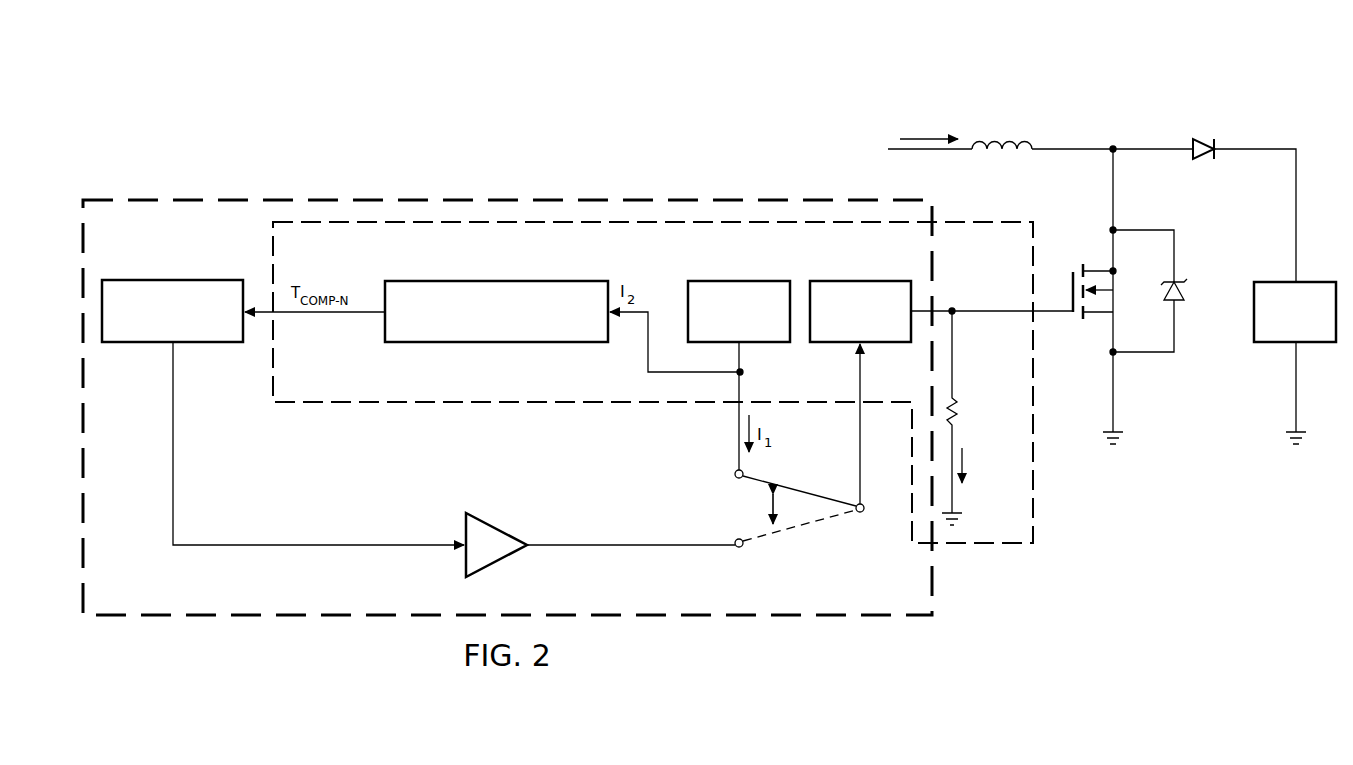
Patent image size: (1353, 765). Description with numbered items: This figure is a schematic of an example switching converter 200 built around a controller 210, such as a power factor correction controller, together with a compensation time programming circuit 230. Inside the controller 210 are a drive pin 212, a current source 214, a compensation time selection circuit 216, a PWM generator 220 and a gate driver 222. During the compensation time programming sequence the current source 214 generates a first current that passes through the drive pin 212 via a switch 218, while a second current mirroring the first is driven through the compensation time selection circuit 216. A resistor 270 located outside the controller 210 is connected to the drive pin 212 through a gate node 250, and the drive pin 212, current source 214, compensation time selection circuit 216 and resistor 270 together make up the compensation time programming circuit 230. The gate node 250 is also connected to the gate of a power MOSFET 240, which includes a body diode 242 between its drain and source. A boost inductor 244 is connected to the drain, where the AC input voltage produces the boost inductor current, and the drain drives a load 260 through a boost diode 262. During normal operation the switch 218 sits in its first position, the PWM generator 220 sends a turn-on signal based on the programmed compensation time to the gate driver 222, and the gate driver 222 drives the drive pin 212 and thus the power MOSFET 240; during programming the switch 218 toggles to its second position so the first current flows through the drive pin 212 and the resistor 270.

The switching converter 200 is at (312, 128).
The controller 210 is at (481, 197).
The drive pin 212 is at (868, 280).
The current source 214 is at (750, 280).
The compensation time selection circuit 216 is at (497, 280).
The switch 218 is at (796, 525).
The pulse width modulation generator 220 is at (163, 280).
The gate driver 222 is at (500, 563).
The compensation time programming circuit 230 is at (653, 382).
The power MOSFET 240 is at (1155, 230).
The body diode 242 is at (1187, 281).
The boost inductor 244 is at (1010, 133).
The gate node 250 is at (953, 308).
The load 260 is at (1315, 282).
The boost diode 262 is at (1205, 138).
The resistor 270 is at (959, 416).